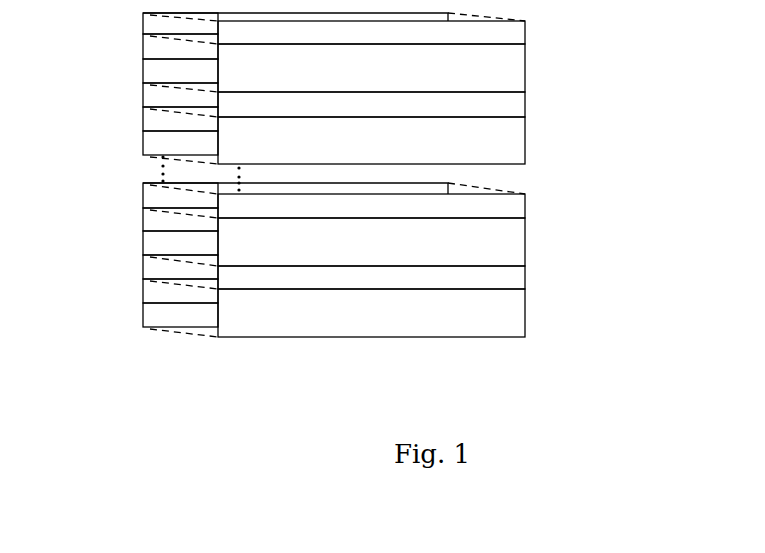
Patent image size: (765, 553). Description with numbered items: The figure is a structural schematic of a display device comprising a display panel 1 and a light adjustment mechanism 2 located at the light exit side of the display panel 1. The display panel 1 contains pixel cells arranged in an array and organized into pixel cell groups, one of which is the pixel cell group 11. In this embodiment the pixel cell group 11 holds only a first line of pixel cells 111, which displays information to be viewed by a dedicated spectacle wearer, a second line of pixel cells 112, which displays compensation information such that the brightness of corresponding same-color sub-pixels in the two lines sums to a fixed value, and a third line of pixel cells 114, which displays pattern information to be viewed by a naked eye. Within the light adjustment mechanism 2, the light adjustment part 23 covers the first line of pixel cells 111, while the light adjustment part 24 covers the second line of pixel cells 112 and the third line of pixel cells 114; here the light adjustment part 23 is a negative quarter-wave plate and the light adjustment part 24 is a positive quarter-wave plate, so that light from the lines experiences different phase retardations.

The display panel 1 is at (138, 262).
The pixel cell group 11 is at (82, 17).
The first line of pixel cells 111 is at (148, 23).
The second line of pixel cells 112 is at (148, 50).
The third line of pixel cells 114 is at (148, 73).
The light adjustment mechanism 2 is at (528, 152).
The light adjustment part 23 is at (516, 32).
The light adjustment part 24 is at (516, 84).